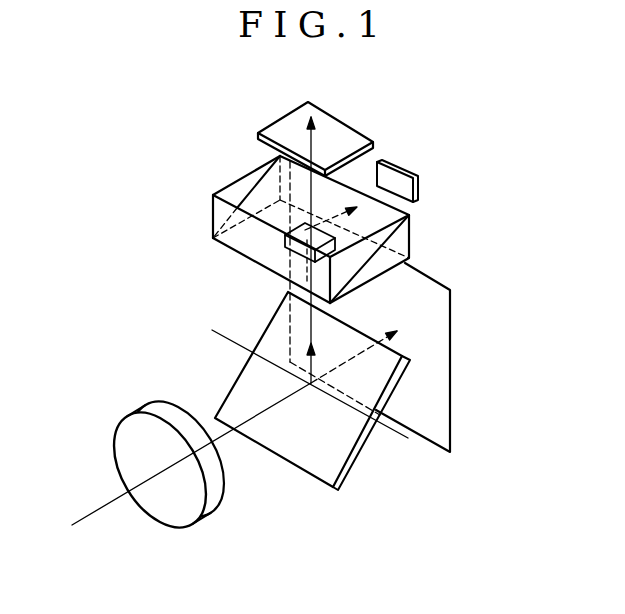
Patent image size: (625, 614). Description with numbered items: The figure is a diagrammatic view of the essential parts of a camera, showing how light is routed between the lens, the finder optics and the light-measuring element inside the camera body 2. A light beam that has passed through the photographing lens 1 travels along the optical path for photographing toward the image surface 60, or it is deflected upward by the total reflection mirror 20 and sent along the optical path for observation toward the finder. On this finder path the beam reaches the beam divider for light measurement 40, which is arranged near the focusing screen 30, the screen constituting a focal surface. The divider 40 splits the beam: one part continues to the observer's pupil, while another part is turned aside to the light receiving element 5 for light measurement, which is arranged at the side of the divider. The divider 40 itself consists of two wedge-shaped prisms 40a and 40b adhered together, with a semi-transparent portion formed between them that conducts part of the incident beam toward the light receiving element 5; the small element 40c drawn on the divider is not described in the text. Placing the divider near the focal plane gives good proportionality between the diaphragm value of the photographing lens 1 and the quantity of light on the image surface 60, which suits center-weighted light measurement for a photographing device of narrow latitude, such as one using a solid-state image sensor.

The photographing lens 1 is at (207, 507).
The camera body 2 is at (478, 518).
The light receiving element 5 is at (395, 184).
The total reflection mirror 20 is at (358, 452).
The focusing screen 30 is at (332, 122).
The beam divider for light measurement 40 is at (294, 203).
The wedge-shaped prism 40a is at (232, 184).
The wedge-shaped prism 40b is at (280, 178).
The small prism element 40c is at (300, 232).
The image surface 60 is at (450, 371).